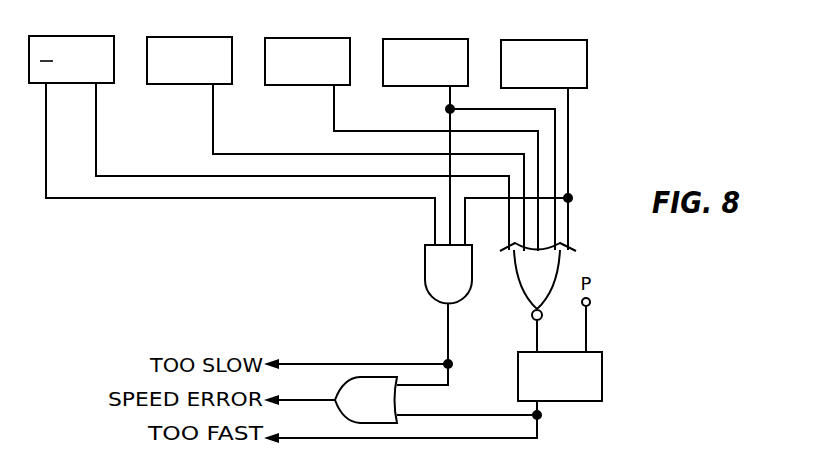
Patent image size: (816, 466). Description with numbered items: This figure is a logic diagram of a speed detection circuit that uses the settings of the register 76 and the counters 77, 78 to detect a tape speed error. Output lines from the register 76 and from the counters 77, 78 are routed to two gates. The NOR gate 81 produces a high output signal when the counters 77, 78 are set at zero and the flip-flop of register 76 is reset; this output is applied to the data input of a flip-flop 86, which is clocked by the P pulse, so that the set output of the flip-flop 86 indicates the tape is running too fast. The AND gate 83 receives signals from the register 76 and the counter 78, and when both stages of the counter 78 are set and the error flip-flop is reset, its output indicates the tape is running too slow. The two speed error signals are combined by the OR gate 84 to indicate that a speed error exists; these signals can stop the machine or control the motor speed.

The register 76 is at (78, 37).
The counter 77 is at (262, 23).
The counter 78 is at (494, 23).
The NOR gate 81 is at (516, 261).
The AND gate 83 is at (424, 261).
The OR gate 84 is at (398, 396).
The flip-flop 86 is at (603, 358).